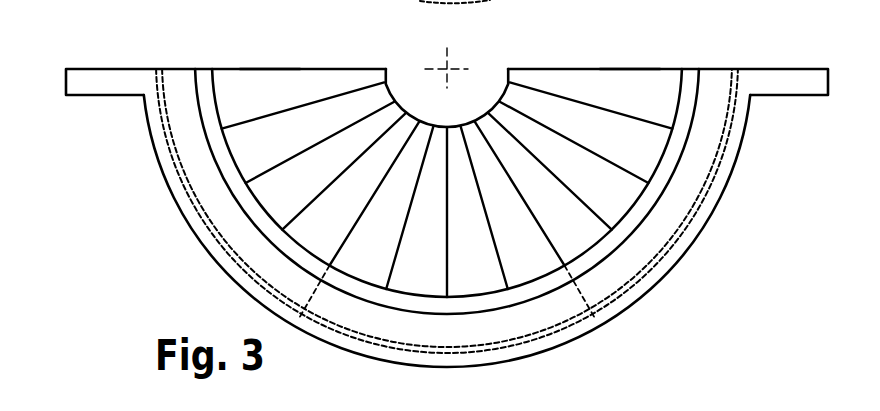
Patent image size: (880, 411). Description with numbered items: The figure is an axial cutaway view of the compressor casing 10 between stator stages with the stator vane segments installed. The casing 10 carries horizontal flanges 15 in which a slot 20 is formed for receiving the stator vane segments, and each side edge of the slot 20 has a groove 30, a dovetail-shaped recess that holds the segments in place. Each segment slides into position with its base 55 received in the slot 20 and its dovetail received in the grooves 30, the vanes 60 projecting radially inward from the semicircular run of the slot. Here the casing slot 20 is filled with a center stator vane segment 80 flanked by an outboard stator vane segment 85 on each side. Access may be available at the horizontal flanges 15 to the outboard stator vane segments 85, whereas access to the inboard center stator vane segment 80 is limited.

The casing 10 is at (658, 312).
The horizontal flanges 15 is at (147, 68).
The slot 20 is at (702, 143).
The groove 30 is at (717, 213).
The base 55 is at (243, 200).
The vanes 60 is at (332, 80).
The center stator vane segment 80 is at (455, 114).
The outboard stator vane segment 85 is at (263, 55).